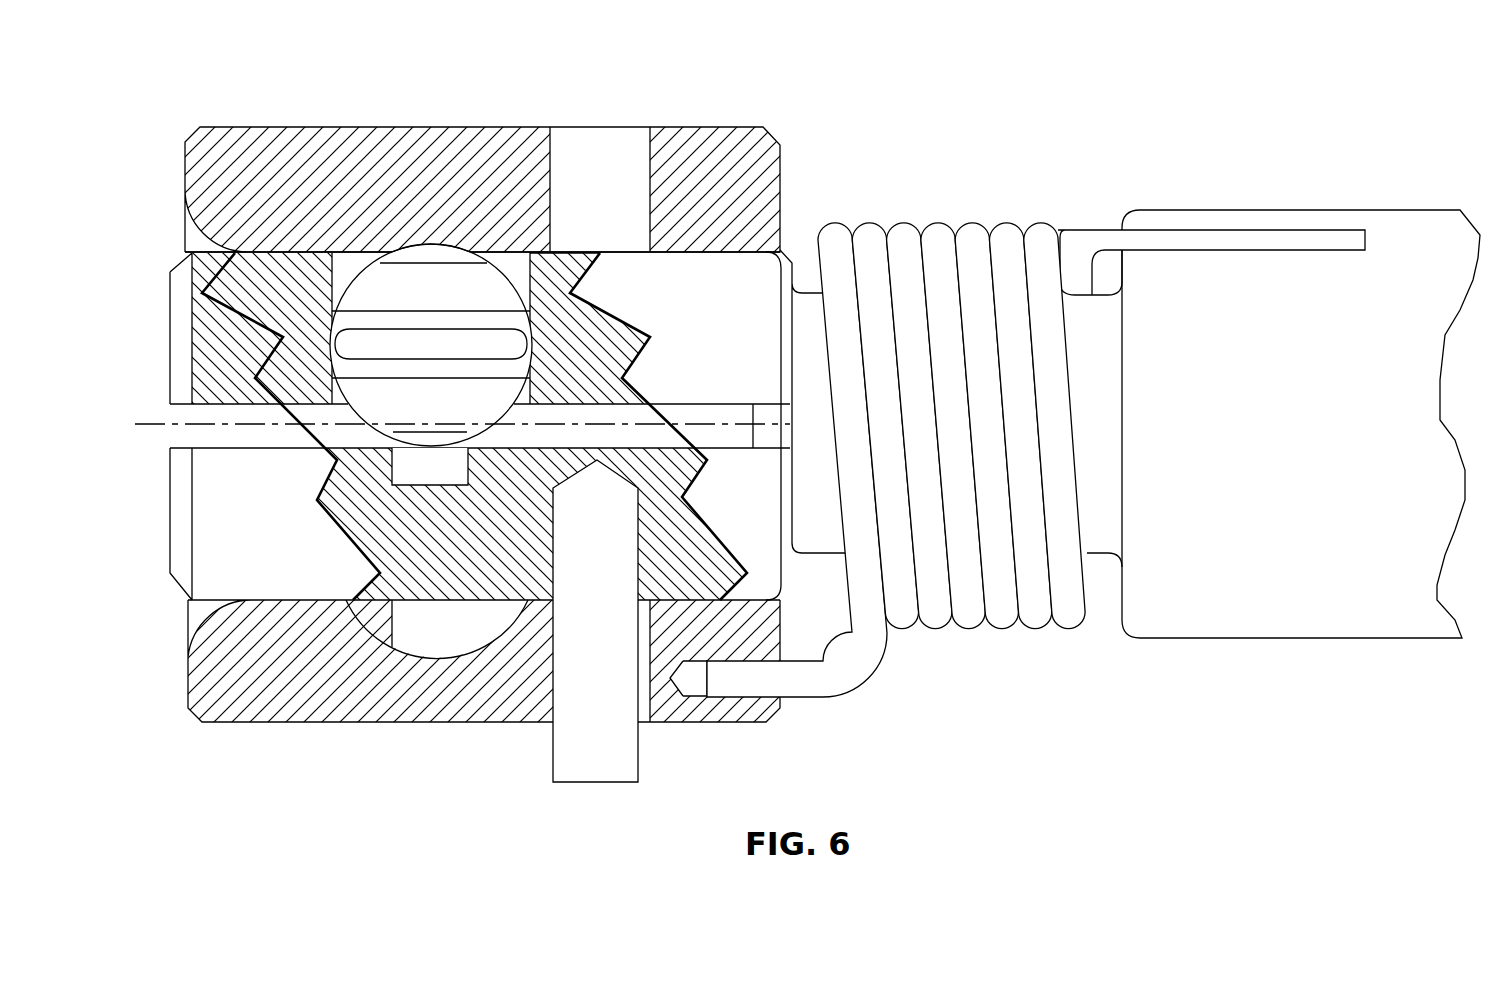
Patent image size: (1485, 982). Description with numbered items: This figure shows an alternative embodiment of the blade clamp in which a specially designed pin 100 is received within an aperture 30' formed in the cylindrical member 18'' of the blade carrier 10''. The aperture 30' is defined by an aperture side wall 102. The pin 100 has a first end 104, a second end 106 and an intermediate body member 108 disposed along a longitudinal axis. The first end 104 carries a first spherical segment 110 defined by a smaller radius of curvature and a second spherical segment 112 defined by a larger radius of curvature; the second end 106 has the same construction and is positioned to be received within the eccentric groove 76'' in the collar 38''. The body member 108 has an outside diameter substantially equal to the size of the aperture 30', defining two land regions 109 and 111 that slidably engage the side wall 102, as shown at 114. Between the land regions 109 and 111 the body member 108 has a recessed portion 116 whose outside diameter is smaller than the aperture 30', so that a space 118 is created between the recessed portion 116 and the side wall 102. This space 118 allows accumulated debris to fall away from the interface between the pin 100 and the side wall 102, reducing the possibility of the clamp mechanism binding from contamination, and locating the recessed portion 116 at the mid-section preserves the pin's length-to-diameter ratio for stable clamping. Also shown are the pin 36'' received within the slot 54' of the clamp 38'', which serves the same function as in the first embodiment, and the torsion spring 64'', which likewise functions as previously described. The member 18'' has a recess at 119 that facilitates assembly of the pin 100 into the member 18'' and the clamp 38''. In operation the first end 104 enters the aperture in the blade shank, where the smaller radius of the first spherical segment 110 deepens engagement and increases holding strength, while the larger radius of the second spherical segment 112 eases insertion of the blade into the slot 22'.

The blade carrier 10'' is at (1269, 376).
The cylindrical member 18'' is at (532, 377).
The slot 22' is at (455, 458).
The aperture 30' is at (482, 176).
The pin 36'' is at (618, 650).
The collar 38'' is at (484, 686).
The slot 54' is at (613, 167).
The torsion spring 64'' is at (896, 426).
The eccentric groove 76'' is at (431, 692).
The pin 100 is at (345, 312).
The aperture side wall 102 is at (540, 263).
The first end 104 is at (362, 418).
The second end 106 is at (447, 240).
The intermediate body member 108 is at (362, 257).
The land region 109 is at (405, 322).
The first spherical segment 110 is at (438, 443).
The land region 111 is at (417, 477).
The second spherical segment 112 is at (490, 405).
The sliding engagement 114 is at (503, 320).
The recessed portion 116 is at (373, 337).
The space 118 is at (338, 338).
The recess 119 is at (468, 485).